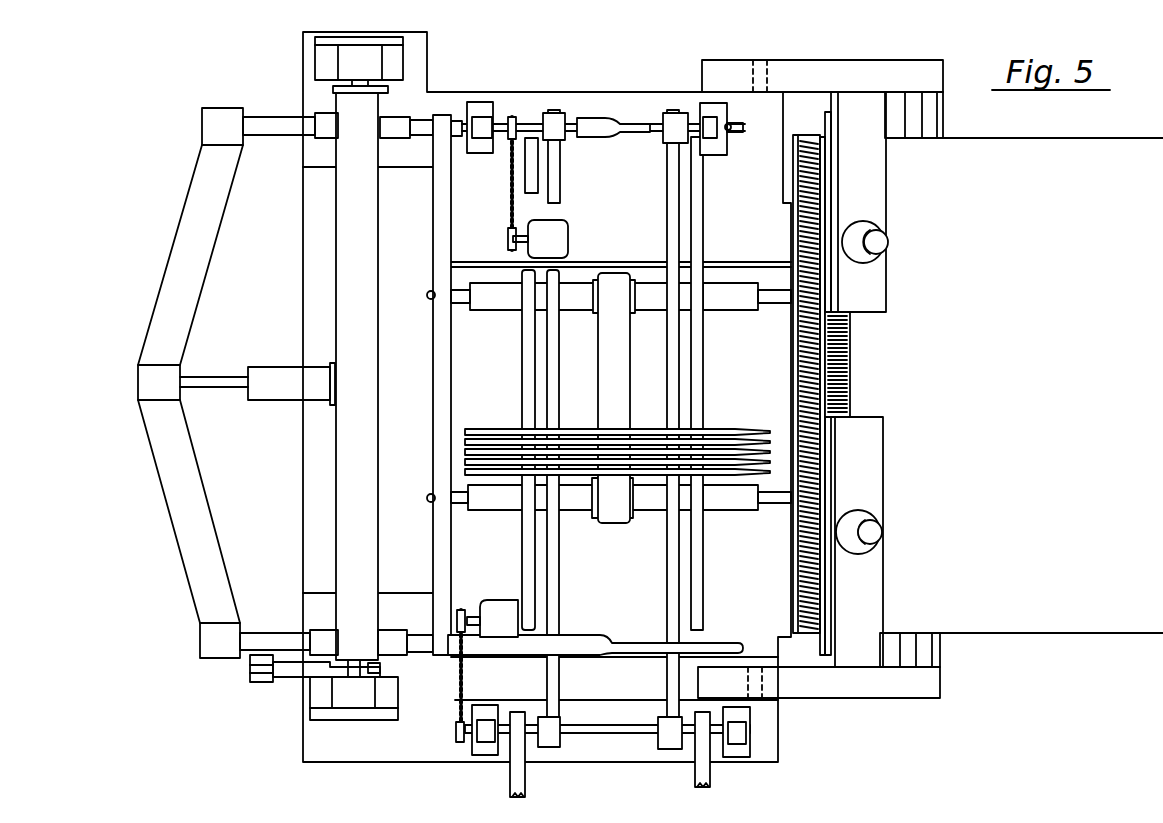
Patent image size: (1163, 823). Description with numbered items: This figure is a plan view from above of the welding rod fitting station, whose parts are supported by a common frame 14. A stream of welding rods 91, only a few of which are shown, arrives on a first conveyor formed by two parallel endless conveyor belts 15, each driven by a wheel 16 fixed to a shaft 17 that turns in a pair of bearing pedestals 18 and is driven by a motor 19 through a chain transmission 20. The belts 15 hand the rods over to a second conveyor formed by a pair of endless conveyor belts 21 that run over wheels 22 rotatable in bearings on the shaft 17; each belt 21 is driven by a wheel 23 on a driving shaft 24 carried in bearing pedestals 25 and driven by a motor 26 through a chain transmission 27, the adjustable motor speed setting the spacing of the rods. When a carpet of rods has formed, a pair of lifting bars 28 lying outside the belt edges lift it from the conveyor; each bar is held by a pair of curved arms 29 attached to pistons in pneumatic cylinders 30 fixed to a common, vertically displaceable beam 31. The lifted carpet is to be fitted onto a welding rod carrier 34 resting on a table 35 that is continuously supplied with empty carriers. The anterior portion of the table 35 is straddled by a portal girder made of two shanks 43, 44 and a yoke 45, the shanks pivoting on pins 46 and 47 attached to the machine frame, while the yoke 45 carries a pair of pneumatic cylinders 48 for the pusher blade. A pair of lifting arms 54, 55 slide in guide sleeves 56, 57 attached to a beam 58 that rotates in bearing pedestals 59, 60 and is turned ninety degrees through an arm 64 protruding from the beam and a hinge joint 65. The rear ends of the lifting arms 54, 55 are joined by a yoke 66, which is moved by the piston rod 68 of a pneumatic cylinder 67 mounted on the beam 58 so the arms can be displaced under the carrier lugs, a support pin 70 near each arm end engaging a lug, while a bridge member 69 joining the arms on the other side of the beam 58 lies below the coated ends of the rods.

The frame 14 is at (298, 739).
The conveyor belts 15 is at (685, 773).
The wheel 16 is at (507, 747).
The shaft 17 is at (623, 732).
The bearing pedestals 18 is at (480, 720).
The motor 19 is at (503, 610).
The chain transmission 20 is at (458, 698).
The conveyor belts 21 is at (557, 183).
The wheels 22 is at (660, 720).
The wheel 23 is at (663, 113).
The driving shaft 24 is at (527, 135).
The bearing pedestals 25 is at (488, 118).
The motor 26 is at (570, 235).
The chain transmission 27 is at (510, 175).
The lifting bars 28 is at (693, 545).
The curved arms 29 is at (455, 300).
The pneumatic cylinder 30 is at (578, 303).
The beam 31 is at (610, 360).
The welding rod carrier 34 is at (856, 348).
The table 35 is at (1029, 629).
The shank 43 is at (836, 691).
The shank 44 is at (815, 72).
The yoke 45 is at (884, 443).
The pin 46 is at (758, 679).
The pin 47 is at (760, 67).
The pneumatic cylinders 48 is at (880, 242).
The lifting arm 54 is at (590, 645).
The lifting arm 55 is at (610, 137).
The guide sleeve 56 is at (390, 633).
The guide sleeve 57 is at (400, 130).
The beam 58 is at (350, 228).
The bearing pedestal 59 is at (363, 700).
The bearing pedestal 60 is at (330, 62).
The arm 64 is at (285, 668).
The hinge joint 65 is at (247, 675).
The yoke 66 is at (192, 467).
The pneumatic cylinder 67 is at (272, 390).
The piston rod 68 is at (215, 383).
The bridge member 69 is at (433, 333).
The support pin 70 is at (728, 130).
The welding rods 91 is at (727, 430).